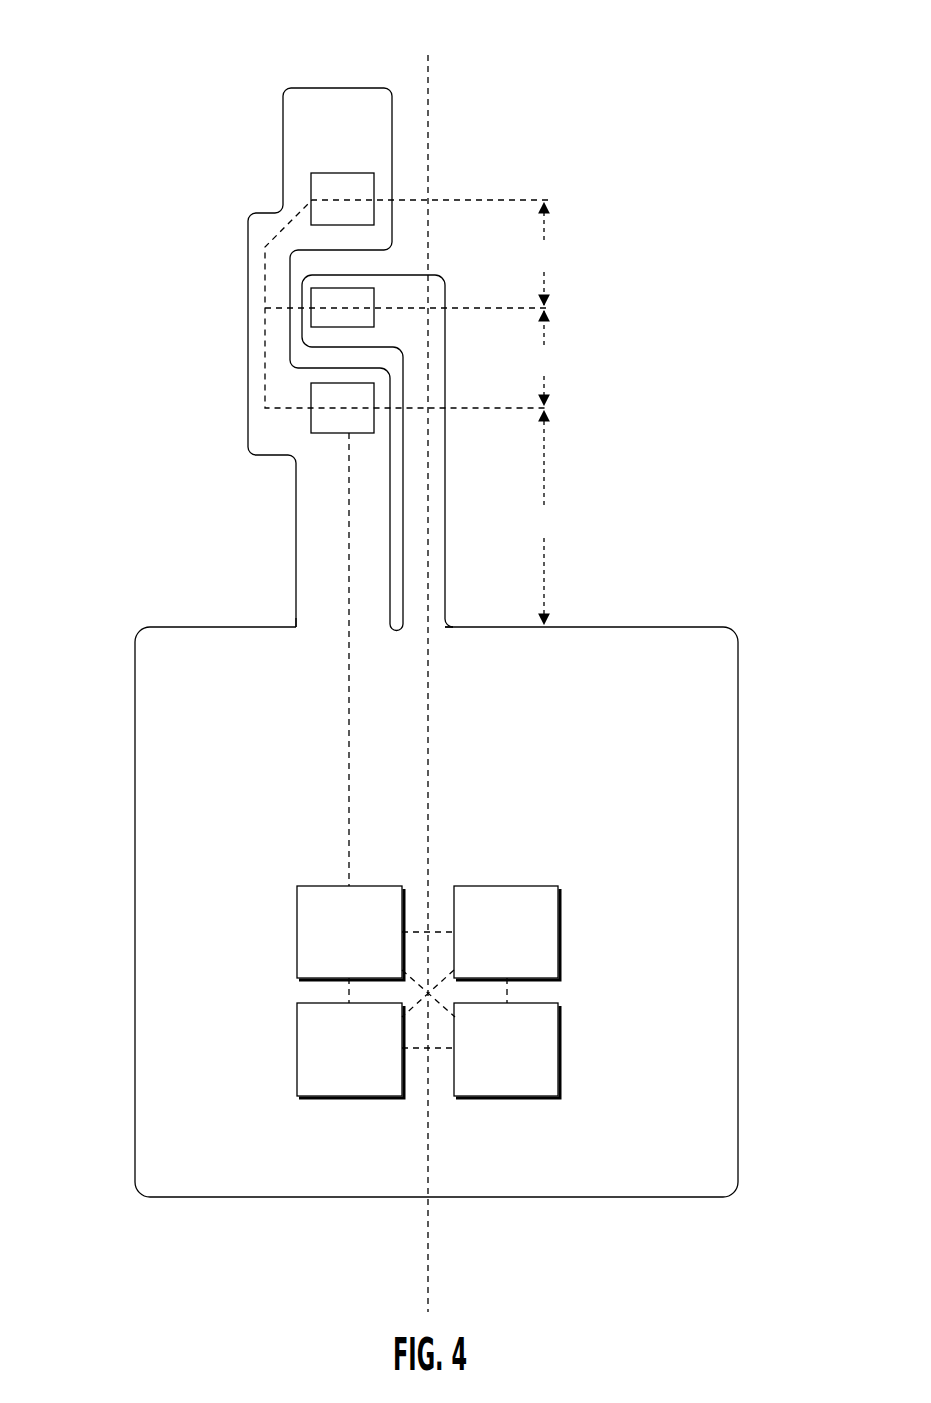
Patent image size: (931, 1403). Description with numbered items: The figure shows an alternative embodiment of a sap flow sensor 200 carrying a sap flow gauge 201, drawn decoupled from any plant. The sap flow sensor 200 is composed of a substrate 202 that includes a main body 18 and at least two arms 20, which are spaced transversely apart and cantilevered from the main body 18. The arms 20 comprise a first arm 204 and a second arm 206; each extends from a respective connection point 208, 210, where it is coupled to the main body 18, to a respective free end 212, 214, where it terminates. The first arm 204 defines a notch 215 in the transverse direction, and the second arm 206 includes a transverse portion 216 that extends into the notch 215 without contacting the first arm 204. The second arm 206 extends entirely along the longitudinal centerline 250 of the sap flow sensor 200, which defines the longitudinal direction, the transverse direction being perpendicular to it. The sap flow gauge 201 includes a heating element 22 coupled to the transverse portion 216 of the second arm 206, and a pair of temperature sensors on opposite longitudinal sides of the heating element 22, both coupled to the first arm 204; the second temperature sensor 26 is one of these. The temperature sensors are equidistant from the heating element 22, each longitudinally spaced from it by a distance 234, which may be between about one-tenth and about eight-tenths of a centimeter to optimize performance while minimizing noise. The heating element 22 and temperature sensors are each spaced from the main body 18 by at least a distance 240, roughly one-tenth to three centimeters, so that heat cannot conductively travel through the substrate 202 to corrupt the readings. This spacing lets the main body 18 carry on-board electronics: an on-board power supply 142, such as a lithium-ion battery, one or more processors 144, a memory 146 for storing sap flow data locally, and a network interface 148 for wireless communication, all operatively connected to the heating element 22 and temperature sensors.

The sap flow sensor 200 is at (106, 86).
The sap flow gauge 201 is at (479, 166).
The substrate 202 is at (693, 720).
The main body 18 is at (715, 865).
The arms 20 is at (349, 378).
The first arm 204 is at (308, 514).
The second arm 206 is at (441, 483).
The connection point 208 is at (292, 623).
The connection point 210 is at (450, 620).
The free end 212 is at (326, 88).
The free end 214 is at (340, 272).
The notch 215 is at (291, 353).
The transverse portion 216 is at (323, 288).
The heating element 22 is at (330, 312).
The second temperature sensor 26 is at (366, 173).
The distance 234 is at (545, 304).
The distance 240 is at (545, 517).
The longitudinal centerline 250 is at (428, 1257).
The on-board power supply 142 is at (507, 1050).
The processors 144 is at (507, 933).
The memory 146 is at (350, 933).
The network interface 148 is at (350, 1050).